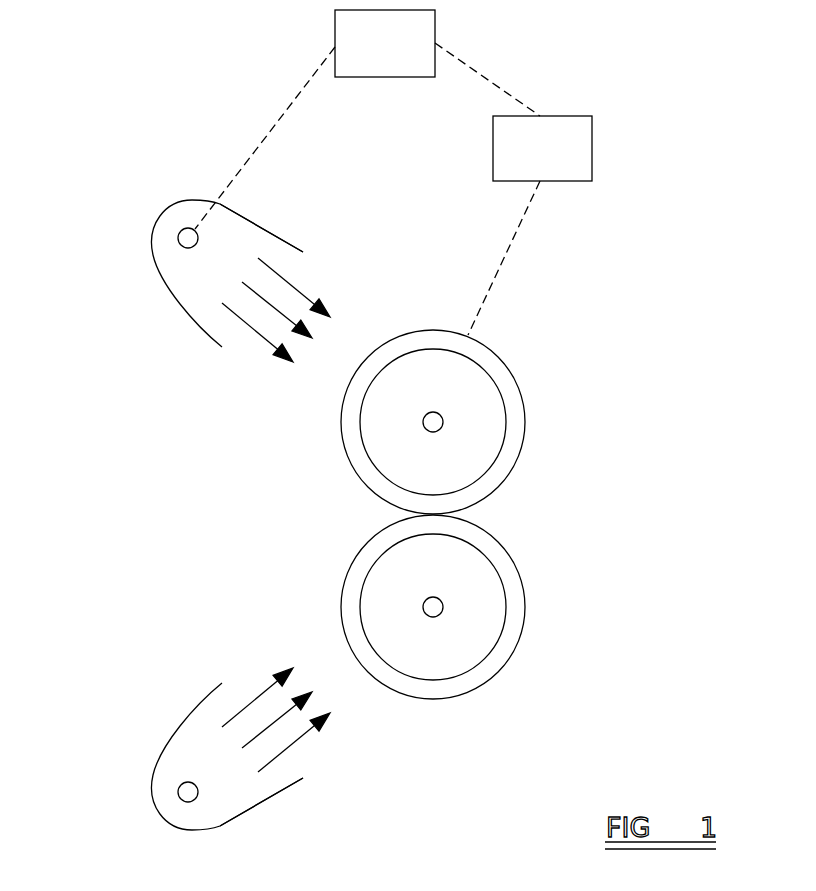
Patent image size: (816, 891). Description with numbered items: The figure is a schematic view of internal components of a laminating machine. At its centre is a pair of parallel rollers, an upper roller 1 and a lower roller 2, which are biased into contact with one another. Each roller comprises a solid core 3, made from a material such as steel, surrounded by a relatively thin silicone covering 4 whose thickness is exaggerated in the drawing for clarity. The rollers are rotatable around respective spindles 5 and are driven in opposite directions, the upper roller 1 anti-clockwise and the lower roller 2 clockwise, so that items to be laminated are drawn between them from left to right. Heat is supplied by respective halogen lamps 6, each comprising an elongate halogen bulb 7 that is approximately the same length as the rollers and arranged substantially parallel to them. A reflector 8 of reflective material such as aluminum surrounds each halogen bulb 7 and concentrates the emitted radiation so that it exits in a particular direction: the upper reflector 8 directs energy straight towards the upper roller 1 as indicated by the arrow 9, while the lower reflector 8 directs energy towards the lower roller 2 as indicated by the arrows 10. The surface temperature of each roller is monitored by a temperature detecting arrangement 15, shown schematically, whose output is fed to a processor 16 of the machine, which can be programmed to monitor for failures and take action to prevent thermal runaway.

The upper roller 1 is at (512, 348).
The lower roller 2 is at (500, 687).
The solid core 3 is at (393, 458).
The silicone covering 4 is at (507, 457).
The spindle 5 is at (445, 421).
The halogen lamp 6 is at (178, 239).
The elongate halogen bulb 7 is at (155, 310).
The reflector 8 is at (268, 227).
The arrow 9 is at (298, 289).
The arrows 10 is at (259, 693).
The temperature detecting arrangement 15 is at (542, 148).
The processor 16 is at (385, 43).